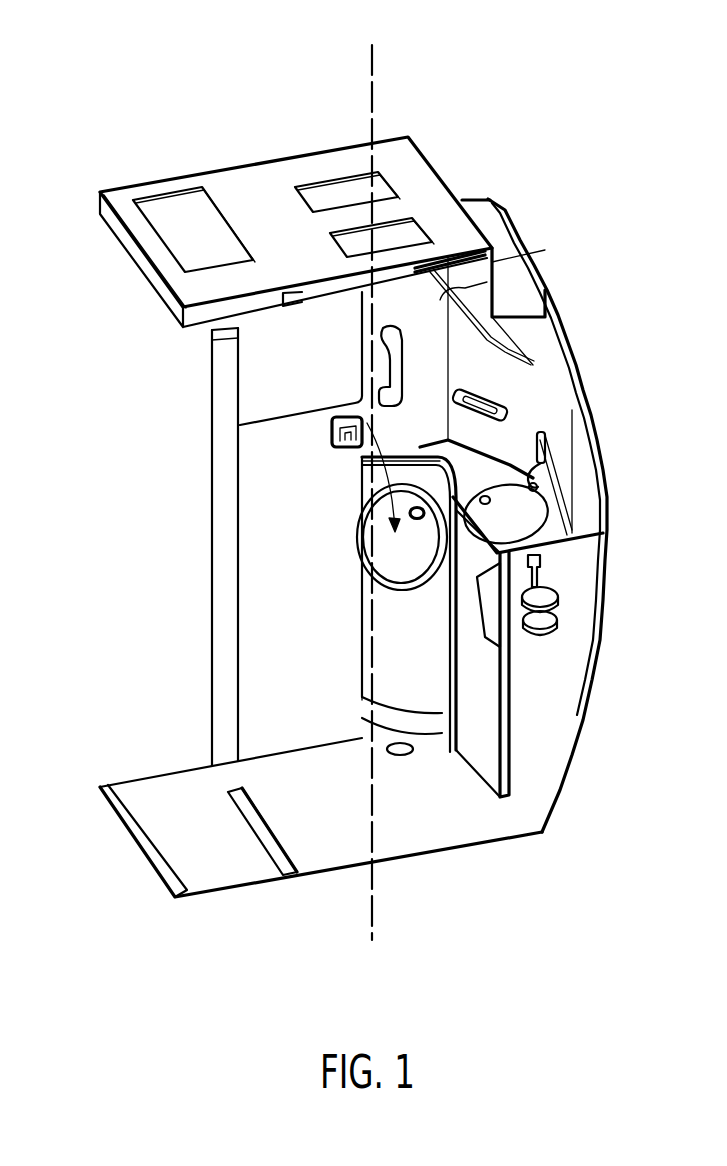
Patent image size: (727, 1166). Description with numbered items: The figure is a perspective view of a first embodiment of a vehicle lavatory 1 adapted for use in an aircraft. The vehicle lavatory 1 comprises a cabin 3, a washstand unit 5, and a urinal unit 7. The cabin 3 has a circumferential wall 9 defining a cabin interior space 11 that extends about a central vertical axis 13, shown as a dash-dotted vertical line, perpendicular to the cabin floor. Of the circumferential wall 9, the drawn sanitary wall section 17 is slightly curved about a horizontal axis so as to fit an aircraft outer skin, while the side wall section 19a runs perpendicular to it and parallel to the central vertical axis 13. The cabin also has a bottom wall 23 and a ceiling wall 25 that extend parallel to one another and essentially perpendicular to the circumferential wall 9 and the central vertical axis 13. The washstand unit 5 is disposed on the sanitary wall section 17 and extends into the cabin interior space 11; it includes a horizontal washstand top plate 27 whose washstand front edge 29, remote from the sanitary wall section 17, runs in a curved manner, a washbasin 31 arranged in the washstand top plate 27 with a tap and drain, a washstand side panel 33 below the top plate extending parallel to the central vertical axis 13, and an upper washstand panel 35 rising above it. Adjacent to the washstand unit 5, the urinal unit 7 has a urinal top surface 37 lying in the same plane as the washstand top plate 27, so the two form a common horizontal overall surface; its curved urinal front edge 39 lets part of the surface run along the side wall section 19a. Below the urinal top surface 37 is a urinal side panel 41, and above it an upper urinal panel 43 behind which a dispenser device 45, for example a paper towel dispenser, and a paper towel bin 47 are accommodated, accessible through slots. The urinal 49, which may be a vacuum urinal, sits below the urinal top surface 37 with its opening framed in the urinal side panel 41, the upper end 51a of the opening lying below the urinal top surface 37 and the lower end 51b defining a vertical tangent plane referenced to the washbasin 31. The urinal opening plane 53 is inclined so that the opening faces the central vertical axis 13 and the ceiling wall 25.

The vehicle lavatory 1 is at (78, 128).
The cabin 3 is at (493, 392).
The washstand unit 5 is at (543, 651).
The urinal unit 7 is at (279, 606).
The circumferential wall 9 is at (226, 487).
The cabin interior space 11 is at (303, 488).
The central vertical axis 13 is at (375, 67).
The sanitary wall section 17 is at (597, 447).
The side wall section 19a is at (257, 532).
The bottom wall 23 is at (443, 817).
The ceiling wall 25 is at (268, 183).
The washstand top plate 27 is at (542, 577).
The washstand front edge 29 is at (557, 610).
The washbasin 31 is at (540, 510).
The washstand side panel 33 is at (498, 688).
The upper washstand panel 35 is at (578, 470).
The urinal top surface 37 is at (550, 436).
The urinal front edge 39 is at (418, 456).
The urinal side panel 41 is at (367, 478).
The upper urinal panel 43 is at (460, 290).
The dispenser device 45 is at (490, 300).
The paper towel bin 47 is at (470, 410).
The urinal 49 is at (288, 606).
The upper end of the urinal opening 51a is at (320, 407).
The lower end of the urinal opening 51b is at (370, 603).
The urinal opening plane 53 is at (392, 547).